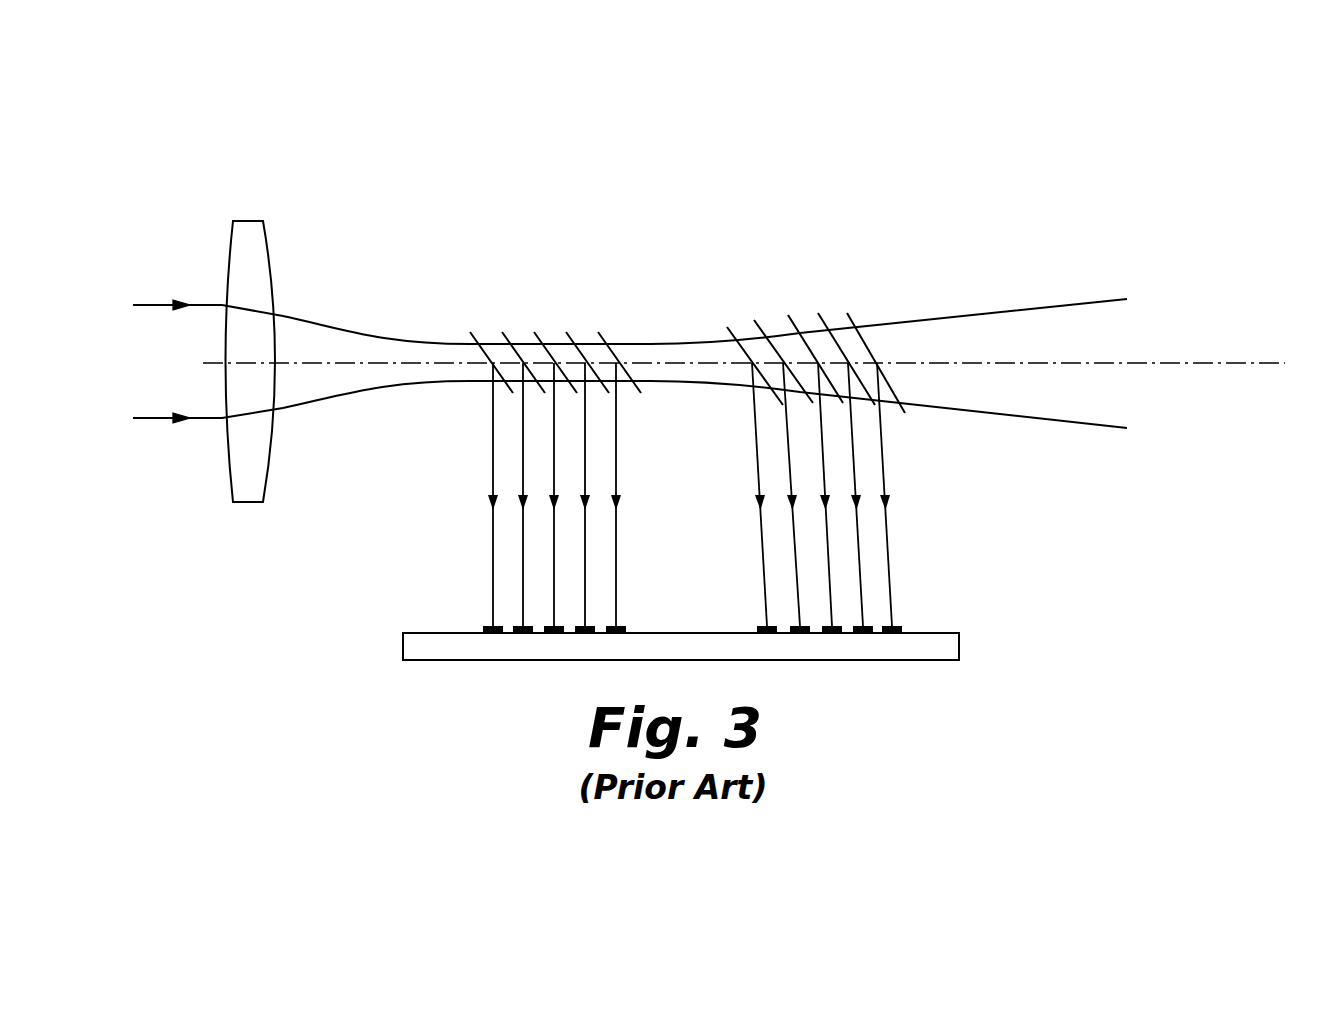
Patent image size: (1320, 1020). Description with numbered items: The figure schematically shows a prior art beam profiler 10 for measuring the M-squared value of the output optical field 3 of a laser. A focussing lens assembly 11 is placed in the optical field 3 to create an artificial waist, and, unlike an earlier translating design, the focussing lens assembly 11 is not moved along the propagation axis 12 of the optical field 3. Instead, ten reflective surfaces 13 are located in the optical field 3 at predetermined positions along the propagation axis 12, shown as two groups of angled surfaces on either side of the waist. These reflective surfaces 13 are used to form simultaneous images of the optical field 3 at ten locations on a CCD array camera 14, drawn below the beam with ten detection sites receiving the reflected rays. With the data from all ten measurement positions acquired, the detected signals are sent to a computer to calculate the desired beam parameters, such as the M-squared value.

The beam profiler 10 is at (978, 160).
The focussing lens assembly 11 is at (263, 252).
The propagation axis 12 is at (1185, 363).
The optical field 3 is at (1052, 325).
The reflective surfaces 13 is at (507, 340).
The CCD array camera 14 is at (960, 642).